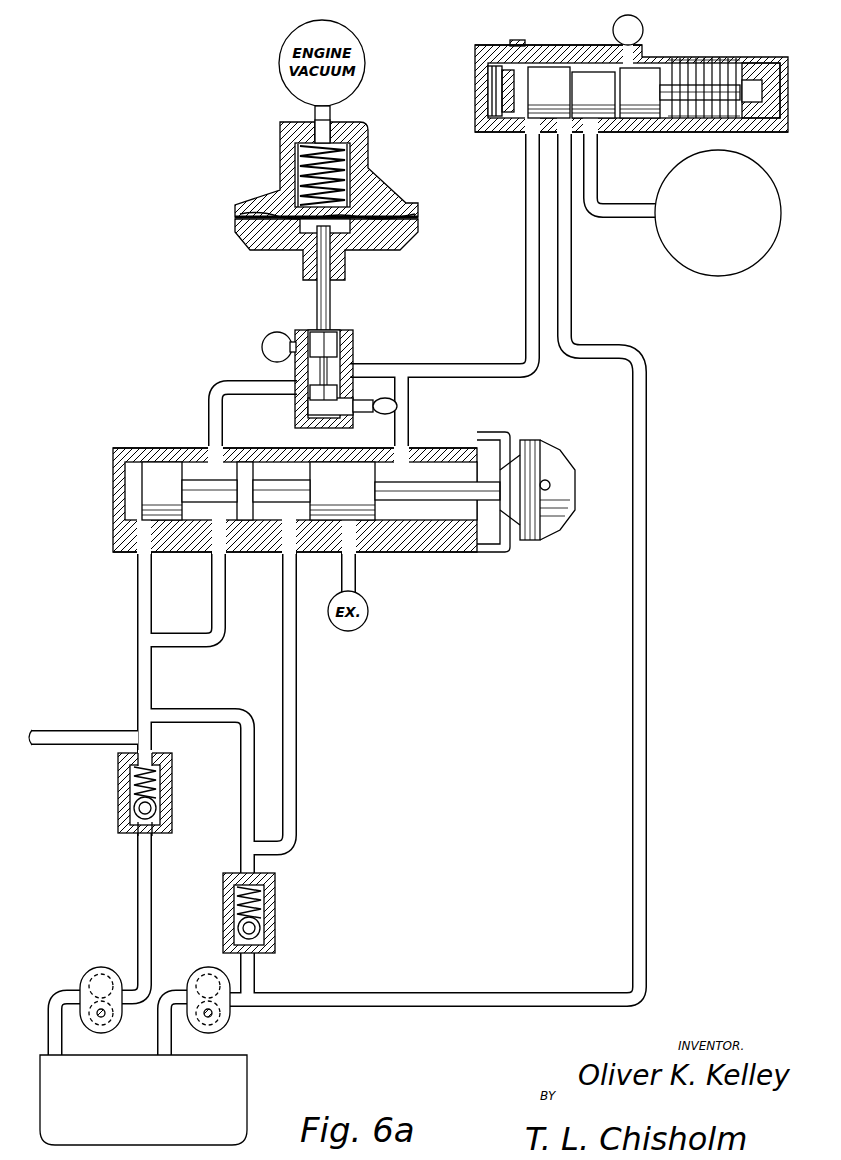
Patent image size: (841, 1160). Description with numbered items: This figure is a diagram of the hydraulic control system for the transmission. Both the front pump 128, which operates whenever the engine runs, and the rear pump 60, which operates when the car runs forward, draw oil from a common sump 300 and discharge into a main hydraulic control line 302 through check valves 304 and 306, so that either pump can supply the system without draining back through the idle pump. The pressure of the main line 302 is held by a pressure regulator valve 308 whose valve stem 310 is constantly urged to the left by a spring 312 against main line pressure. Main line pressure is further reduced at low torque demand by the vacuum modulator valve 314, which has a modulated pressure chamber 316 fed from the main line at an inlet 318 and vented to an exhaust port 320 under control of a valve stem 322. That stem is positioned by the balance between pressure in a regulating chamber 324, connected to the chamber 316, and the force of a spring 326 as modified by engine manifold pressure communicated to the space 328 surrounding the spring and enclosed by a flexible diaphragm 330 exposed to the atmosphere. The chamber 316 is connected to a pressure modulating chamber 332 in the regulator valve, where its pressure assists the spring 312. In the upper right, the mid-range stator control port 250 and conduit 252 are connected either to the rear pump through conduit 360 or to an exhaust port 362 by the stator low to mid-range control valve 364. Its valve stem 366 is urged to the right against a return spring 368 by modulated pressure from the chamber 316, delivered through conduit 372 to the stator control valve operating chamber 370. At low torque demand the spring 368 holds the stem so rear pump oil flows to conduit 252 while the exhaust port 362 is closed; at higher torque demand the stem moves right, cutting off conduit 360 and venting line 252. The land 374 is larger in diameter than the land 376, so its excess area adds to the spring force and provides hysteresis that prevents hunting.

The rear pump 60 is at (205, 966).
The front pump 128 is at (96, 966).
The mid-range stator control port 250 is at (728, 262).
The conduit 252 is at (605, 188).
The sump 300 is at (235, 1078).
The main hydraulic control line 302 is at (207, 404).
The check valve 304 is at (118, 795).
The check valve 306 is at (275, 932).
The pressure regulator valve 308 is at (135, 448).
The valve stem 310 is at (312, 532).
The spring 312 is at (538, 548).
The vacuum modulator valve 314 is at (255, 325).
The modulated pressure chamber 316 is at (325, 361).
The inlet 318 is at (300, 388).
The exhaust port 320 is at (265, 338).
The valve stem 322 is at (340, 332).
The regulating chamber 324 is at (318, 410).
The spring 326 is at (352, 170).
The space 328 is at (380, 208).
The flexible diaphragm 330 is at (392, 225).
The pressure modulating chamber 332 is at (404, 532).
The conduit 360 is at (648, 628).
The exhaust port 362 is at (644, 32).
The stator low to mid-range control valve 364 is at (601, 82).
The valve stem 366 is at (590, 90).
The return spring 368 is at (745, 90).
The stator control valve operating chamber 370 is at (520, 43).
The conduit 372 is at (528, 230).
The land 374 is at (552, 80).
The land 376 is at (645, 108).